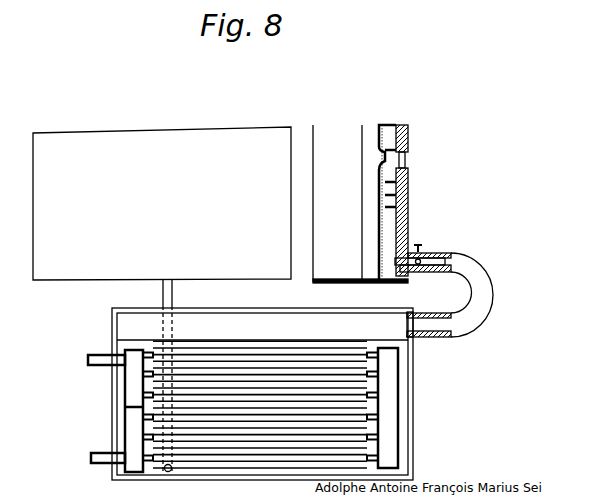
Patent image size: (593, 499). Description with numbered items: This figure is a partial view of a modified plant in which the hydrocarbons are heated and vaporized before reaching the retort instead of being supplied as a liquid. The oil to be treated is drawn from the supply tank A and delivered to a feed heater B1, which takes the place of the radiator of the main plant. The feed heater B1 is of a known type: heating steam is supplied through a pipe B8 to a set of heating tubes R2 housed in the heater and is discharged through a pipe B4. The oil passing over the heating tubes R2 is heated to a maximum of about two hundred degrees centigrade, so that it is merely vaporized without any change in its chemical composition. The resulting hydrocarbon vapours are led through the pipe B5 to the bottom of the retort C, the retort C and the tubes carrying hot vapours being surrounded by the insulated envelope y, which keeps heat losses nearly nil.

The feed tank A is at (173, 144).
The retort C is at (320, 145).
The insulated envelope y is at (402, 238).
The feed heater B1 is at (219, 328).
The pipe B5 is at (481, 310).
The steam supply pipe B8 is at (82, 363).
The steam discharge pipe B4 is at (83, 460).
The heating tubes R2 is at (257, 436).